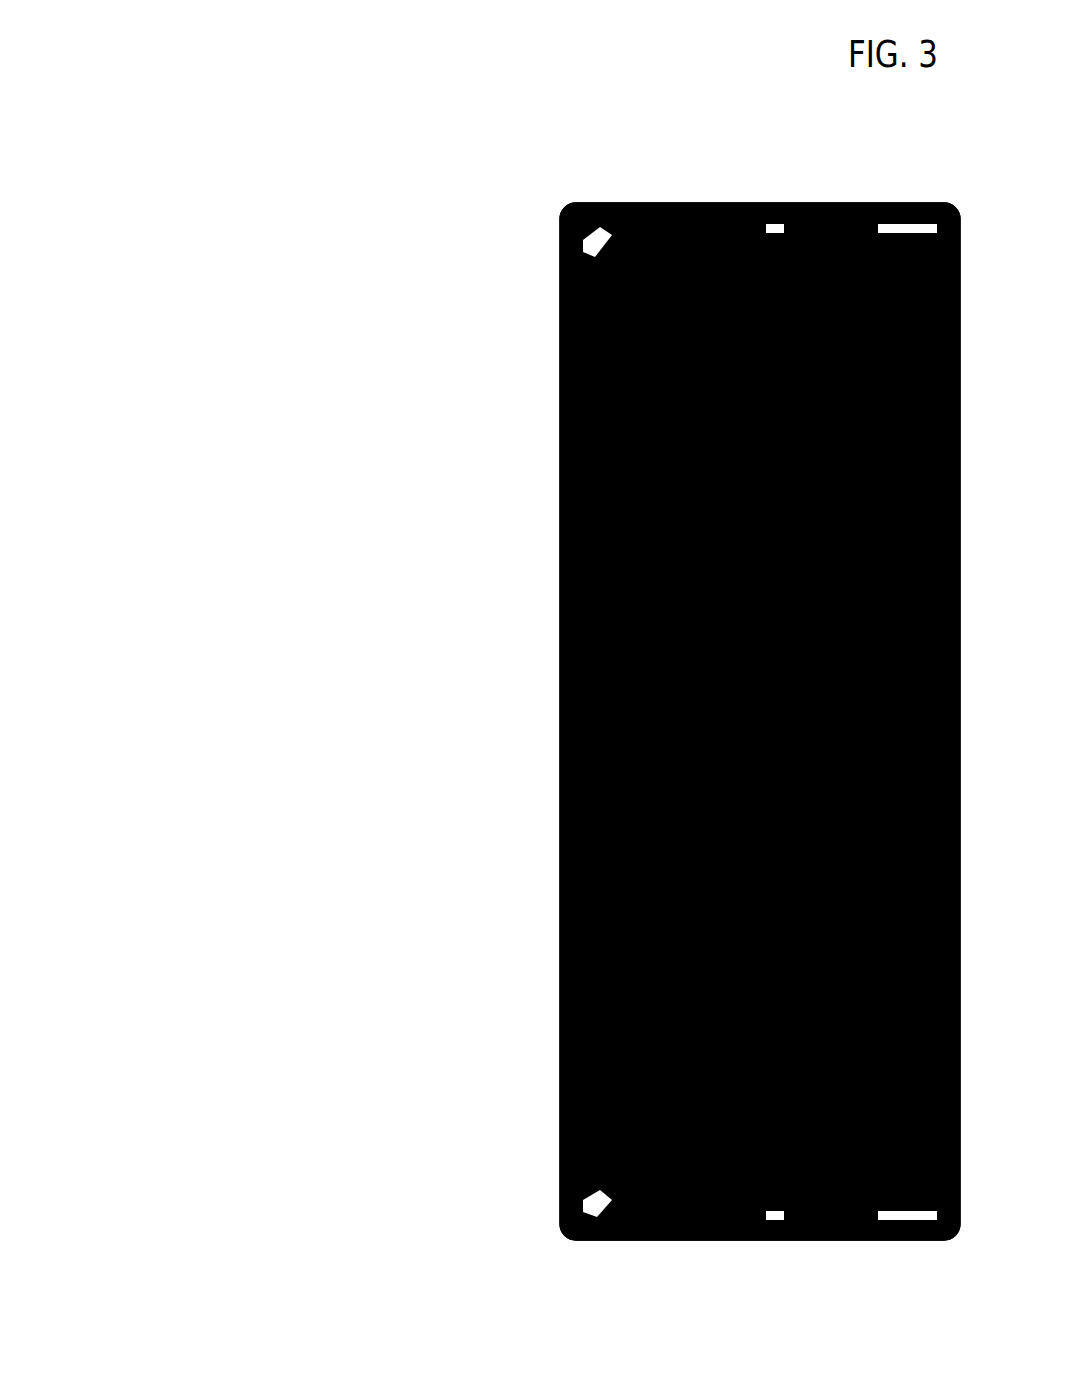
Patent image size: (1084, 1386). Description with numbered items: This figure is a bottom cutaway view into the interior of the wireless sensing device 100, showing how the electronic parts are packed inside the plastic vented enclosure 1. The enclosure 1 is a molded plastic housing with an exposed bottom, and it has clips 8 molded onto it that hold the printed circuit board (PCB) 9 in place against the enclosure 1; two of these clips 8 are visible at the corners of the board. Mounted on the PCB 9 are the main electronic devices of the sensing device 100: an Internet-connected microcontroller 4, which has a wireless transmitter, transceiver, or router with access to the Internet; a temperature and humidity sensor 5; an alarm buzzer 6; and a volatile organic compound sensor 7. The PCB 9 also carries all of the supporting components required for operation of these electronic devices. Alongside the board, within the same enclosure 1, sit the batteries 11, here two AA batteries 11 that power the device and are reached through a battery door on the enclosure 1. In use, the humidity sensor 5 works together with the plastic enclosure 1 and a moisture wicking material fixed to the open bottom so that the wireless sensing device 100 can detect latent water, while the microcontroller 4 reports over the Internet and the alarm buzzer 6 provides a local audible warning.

The wireless sensing device 100 is at (660, 47).
The plastic vented enclosure 1 is at (552, 1090).
The Internet-connected microcontroller 4 is at (647, 1170).
The temperature and humidity sensor 5 is at (702, 778).
The alarm buzzer 6 is at (630, 290).
The volatile organic compound sensor 7 is at (640, 793).
The clips 8 is at (566, 223).
The printed circuit board (PCB) 9 is at (633, 932).
The batteries 11 is at (840, 462).